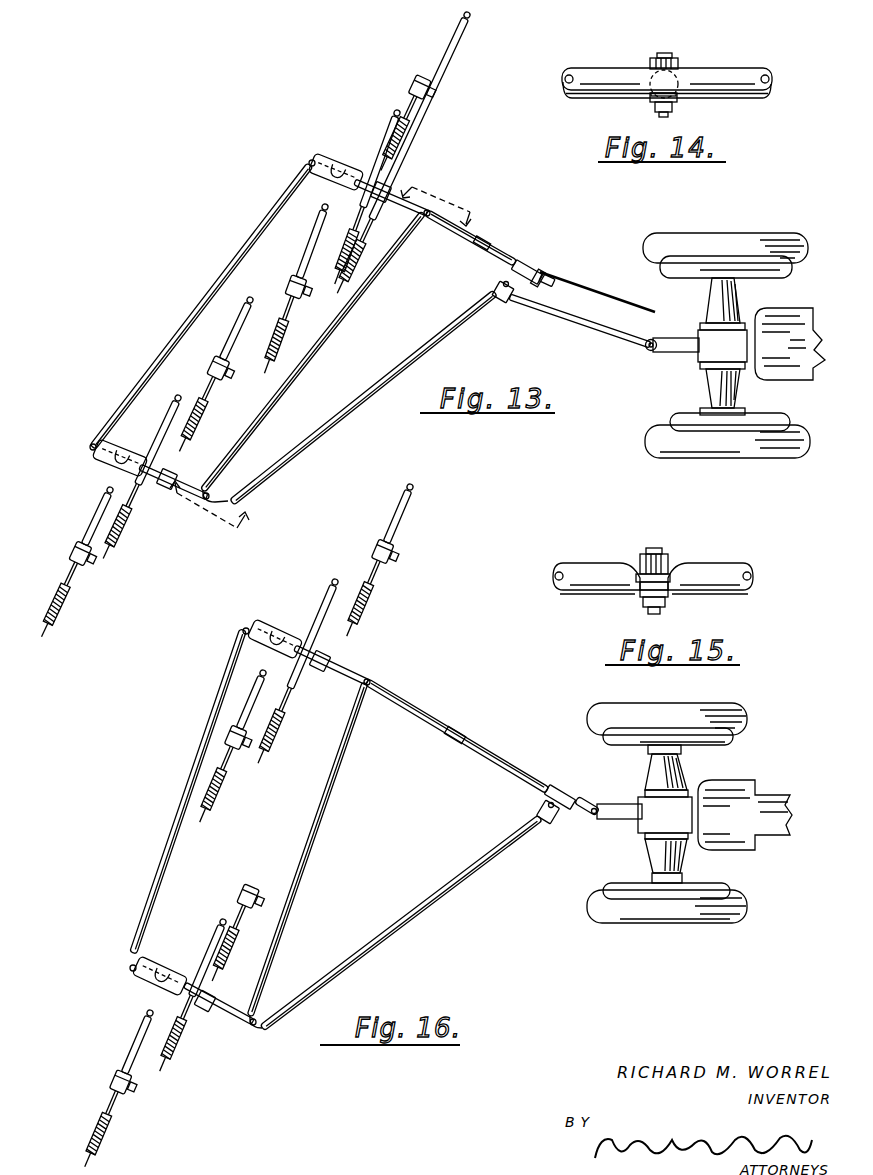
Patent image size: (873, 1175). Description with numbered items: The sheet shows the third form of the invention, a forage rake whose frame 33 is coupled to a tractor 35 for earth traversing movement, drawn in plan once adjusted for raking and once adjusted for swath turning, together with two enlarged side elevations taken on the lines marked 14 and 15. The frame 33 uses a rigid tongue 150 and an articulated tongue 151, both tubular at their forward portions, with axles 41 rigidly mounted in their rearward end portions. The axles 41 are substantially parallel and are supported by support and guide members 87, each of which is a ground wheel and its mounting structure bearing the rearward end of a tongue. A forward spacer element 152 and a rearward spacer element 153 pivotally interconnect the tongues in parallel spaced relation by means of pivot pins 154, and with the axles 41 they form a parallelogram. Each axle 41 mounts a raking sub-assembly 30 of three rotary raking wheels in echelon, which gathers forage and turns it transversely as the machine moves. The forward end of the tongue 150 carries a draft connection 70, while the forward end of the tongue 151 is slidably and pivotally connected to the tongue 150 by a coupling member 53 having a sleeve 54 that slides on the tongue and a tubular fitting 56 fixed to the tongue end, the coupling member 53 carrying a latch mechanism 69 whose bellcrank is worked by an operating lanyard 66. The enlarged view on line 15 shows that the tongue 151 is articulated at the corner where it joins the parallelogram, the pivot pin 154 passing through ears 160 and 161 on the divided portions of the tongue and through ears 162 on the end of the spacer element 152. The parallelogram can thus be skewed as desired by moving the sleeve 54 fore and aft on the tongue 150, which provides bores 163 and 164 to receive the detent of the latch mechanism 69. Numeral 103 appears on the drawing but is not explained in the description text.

In FIG. 13, the section line 14— 14 is at (448, 193).
In FIG. 13, the section line 15— 15 is at (206, 513).
In FIG. 13, the raking sub-assembly 30 is at (445, 125).
In FIG. 16, the raking sub-assembly 30 is at (375, 617).
In FIG. 13, the frame 33 is at (495, 243).
In FIG. 13, the tractor 35 is at (704, 372).
In FIG. 16, the tractor 35 is at (689, 813).
In FIG. 13, the axle 41 is at (389, 201).
In FIG. 16, the axle 41 is at (276, 834).
In FIG. 13, the coupling member 53 is at (544, 268).
In FIG. 16, the coupling member 53 is at (569, 823).
In FIG. 13, the sleeve 54 is at (532, 262).
In FIG. 13, the tubular fitting 56 is at (508, 303).
In FIG. 13, the operating lanyard 66 is at (598, 293).
In FIG. 16, the operating lanyard 66 is at (677, 808).
In FIG. 13, the latch mechanism 69 is at (562, 277).
In FIG. 16, the latch mechanism 69 is at (586, 790).
In FIG. 13, the draft connection 70 is at (656, 340).
In FIG. 13, the support and guide member 87 is at (339, 151).
In FIG. 16, the support and guide member 87 is at (270, 623).
In FIG. 13, the wheel axle arm 103 is at (676, 354).
In FIG. 16, the wheel axle arm 103 is at (626, 823).
In FIG. 13, the rigid tongue 150 is at (443, 233).
In FIG. 14, the rigid tongue 150 is at (708, 76).
In FIG. 16, the rigid tongue 150 is at (434, 718).
In FIG. 13, the articulated tongue 151 is at (366, 403).
In FIG. 15, the articulated tongue 151 is at (724, 570).
In FIG. 16, the articulated tongue 151 is at (426, 911).
In FIG. 13, the forward spacer element 152 is at (358, 306).
In FIG. 14, the forward spacer element 152 is at (698, 96).
In FIG. 16, the forward spacer element 152 is at (334, 808).
In FIG. 13, the rearward spacer element 153 is at (229, 266).
In FIG. 16, the rearward spacer element 153 is at (178, 822).
In FIG. 13, the pivot pin 154 is at (313, 160).
In FIG. 14, the pivot pin 154 is at (663, 53).
In FIG. 15, the pivot pin 154 is at (656, 548).
In FIG. 16, the pivot pin 154 is at (246, 629).
In FIG. 15, the ear 160 is at (641, 590).
In FIG. 15, the ear 161 is at (674, 574).
In FIG. 15, the ear 162 is at (640, 565).
In FIG. 16, the bore 163 is at (459, 739).
In FIG. 13, the bore 164 is at (606, 328).